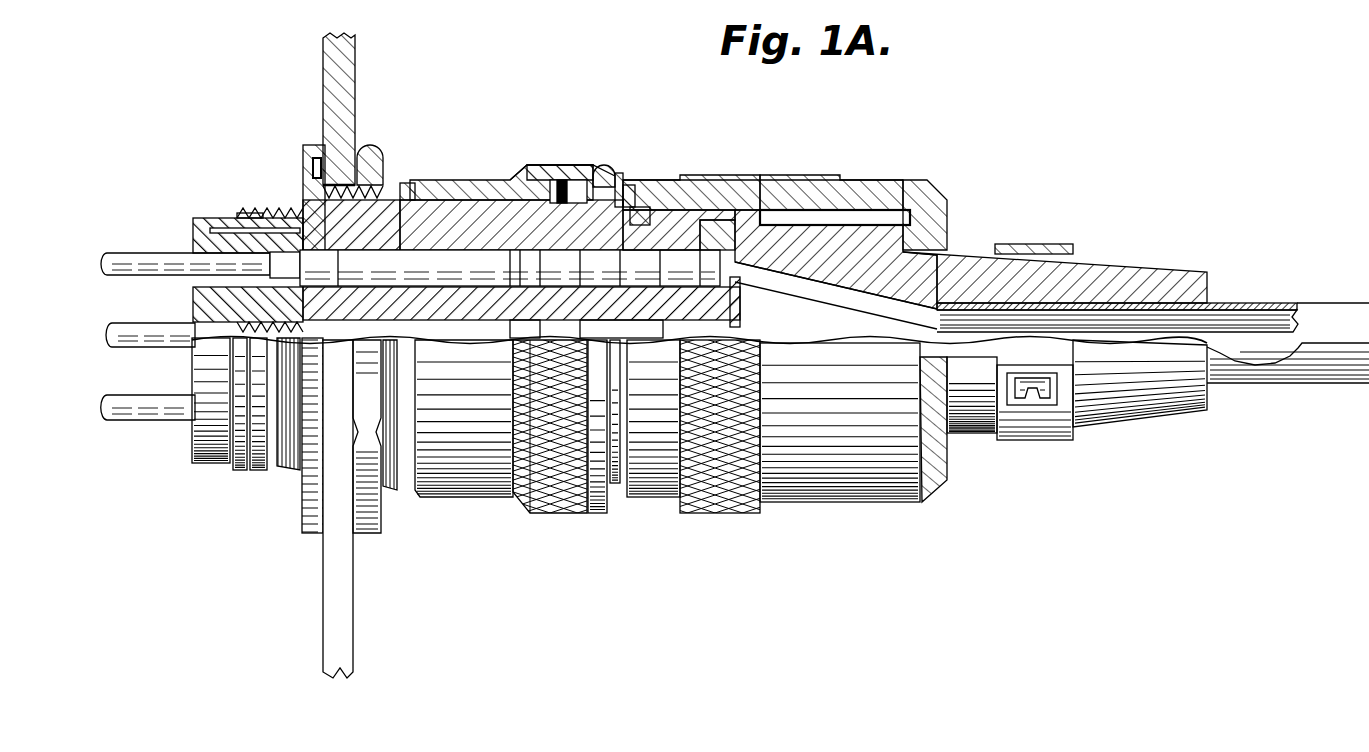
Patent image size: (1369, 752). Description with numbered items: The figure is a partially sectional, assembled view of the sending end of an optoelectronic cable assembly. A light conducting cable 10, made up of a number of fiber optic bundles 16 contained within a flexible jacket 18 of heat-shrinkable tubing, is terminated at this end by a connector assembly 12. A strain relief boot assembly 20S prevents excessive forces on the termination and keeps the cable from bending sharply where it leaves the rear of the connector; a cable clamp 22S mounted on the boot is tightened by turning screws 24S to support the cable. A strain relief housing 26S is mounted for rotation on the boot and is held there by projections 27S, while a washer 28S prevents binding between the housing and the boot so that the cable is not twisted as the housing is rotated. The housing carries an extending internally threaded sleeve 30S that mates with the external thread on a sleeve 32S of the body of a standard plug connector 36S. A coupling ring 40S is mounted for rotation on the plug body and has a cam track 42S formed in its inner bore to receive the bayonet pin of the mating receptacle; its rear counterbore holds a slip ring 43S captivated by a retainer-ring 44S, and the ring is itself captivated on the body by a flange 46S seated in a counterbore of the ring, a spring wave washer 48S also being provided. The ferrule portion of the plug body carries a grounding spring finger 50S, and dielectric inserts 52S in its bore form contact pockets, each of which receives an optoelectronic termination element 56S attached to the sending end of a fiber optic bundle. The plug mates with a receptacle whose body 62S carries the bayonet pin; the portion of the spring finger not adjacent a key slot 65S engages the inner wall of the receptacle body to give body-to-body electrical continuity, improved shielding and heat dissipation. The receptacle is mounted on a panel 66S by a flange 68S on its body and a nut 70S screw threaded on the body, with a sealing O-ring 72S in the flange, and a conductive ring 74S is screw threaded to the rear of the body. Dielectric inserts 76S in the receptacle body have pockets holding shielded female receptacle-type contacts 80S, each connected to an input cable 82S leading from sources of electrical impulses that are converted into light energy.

The light conducting cable 10 is at (1355, 390).
The connector assembly 12 is at (710, 163).
The fiber optic bundles 16 is at (1240, 323).
The flexible jacket 18 is at (1283, 303).
The strain relief boot assembly 20S is at (1150, 270).
The cable clamp 22S is at (1023, 443).
The screws 24S is at (1035, 398).
The strain relief housing 26S is at (780, 188).
The projections 27S is at (923, 220).
The washer 28S is at (947, 207).
The internally threaded sleeve 30S is at (653, 187).
The sleeve 32S is at (720, 180).
The plug connector 36S is at (590, 167).
The coupling ring 40S is at (597, 147).
The cam track 42S is at (470, 197).
The slip ring 43S is at (610, 190).
The retainer-ring 44S is at (600, 173).
The flange 46S is at (503, 252).
The spring wave washer 48S is at (563, 193).
The grounding spring finger 50S is at (490, 220).
The dielectric inserts 52S is at (430, 227).
The optoelectronic termination element 56S is at (653, 418).
The receptacle body 62S is at (337, 180).
The key slot 65S is at (385, 262).
The panel 66S is at (335, 623).
The flange 68S is at (307, 145).
The nut 70S is at (383, 147).
The sealing O-ring 72S is at (311, 160).
The conductive ring 74S is at (210, 220).
The dielectric inserts 76S is at (190, 238).
The shielded female receptacle-type contacts 80S is at (405, 200).
The input cables 82S is at (110, 393).